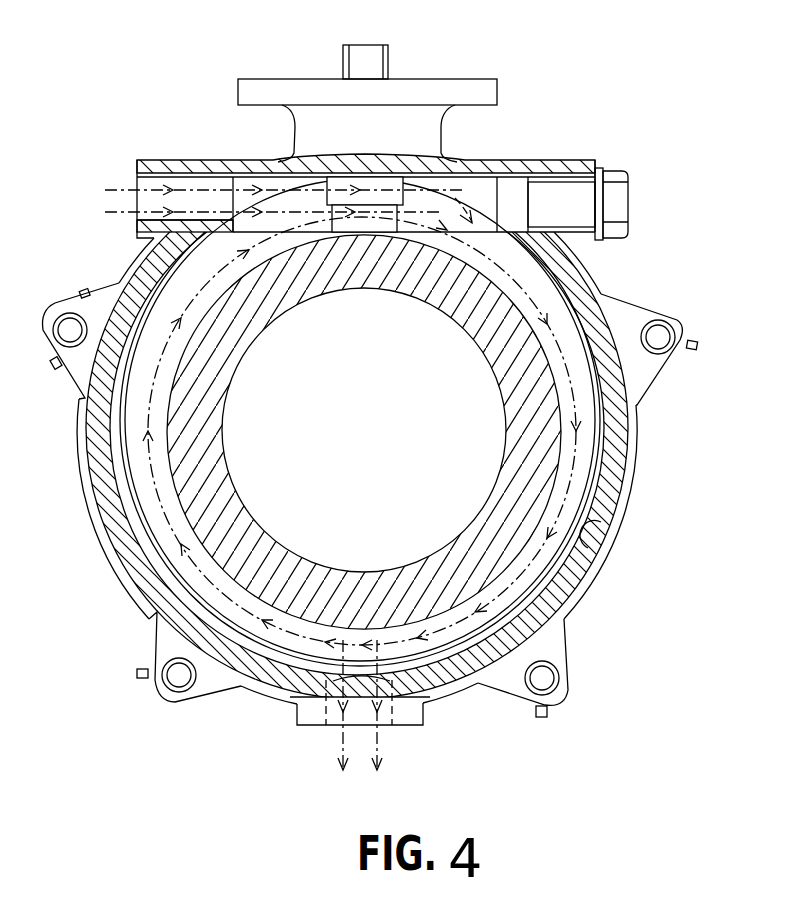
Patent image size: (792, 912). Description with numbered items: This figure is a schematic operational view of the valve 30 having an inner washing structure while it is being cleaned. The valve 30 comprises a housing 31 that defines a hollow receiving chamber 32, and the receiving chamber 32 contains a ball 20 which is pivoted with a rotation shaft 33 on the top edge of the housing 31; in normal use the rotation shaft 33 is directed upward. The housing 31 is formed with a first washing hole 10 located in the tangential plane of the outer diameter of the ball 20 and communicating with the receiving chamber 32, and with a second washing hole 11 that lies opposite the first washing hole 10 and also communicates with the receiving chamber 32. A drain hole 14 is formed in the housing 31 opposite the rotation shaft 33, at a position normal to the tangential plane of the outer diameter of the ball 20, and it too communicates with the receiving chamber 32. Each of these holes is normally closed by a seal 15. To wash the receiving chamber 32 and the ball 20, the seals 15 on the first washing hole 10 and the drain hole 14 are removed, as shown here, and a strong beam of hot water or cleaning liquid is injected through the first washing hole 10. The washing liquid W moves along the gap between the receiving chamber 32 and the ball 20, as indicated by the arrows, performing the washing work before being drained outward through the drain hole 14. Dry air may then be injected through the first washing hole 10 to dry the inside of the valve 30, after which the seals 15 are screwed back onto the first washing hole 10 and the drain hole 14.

The first washing hole 10 is at (138, 187).
The second washing hole 11 is at (529, 182).
The drain hole 14 is at (385, 752).
The seal 15 is at (630, 198).
The ball 20 is at (538, 436).
The valve 30 is at (668, 268).
The housing 31 is at (633, 462).
The receiving chamber 32 is at (605, 522).
The rotation shaft 33 is at (390, 60).
The washing liquid W is at (112, 190).